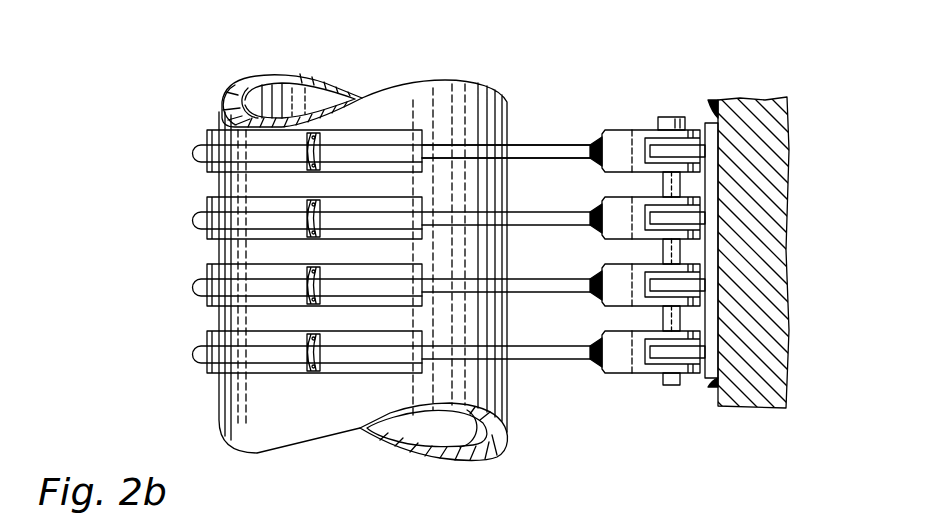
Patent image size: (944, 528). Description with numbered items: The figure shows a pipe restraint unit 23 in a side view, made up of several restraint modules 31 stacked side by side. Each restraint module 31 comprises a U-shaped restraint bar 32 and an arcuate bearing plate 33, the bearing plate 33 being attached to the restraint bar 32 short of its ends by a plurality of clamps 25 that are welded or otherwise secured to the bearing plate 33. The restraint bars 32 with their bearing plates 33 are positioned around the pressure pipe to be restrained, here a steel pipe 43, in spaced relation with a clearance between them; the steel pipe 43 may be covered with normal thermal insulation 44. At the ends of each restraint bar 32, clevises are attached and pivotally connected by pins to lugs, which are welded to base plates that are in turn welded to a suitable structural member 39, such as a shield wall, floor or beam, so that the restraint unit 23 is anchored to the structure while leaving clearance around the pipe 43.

The pipe restraint unit 23 is at (630, 117).
The clamps 25 is at (313, 370).
The restraint module 31 is at (183, 150).
The U-shaped restraint bar 32 is at (557, 145).
The bearing plate 33 is at (398, 127).
The structural member 39 is at (770, 98).
The steel pipe 43 is at (312, 90).
The thermal insulation 44 is at (245, 83).